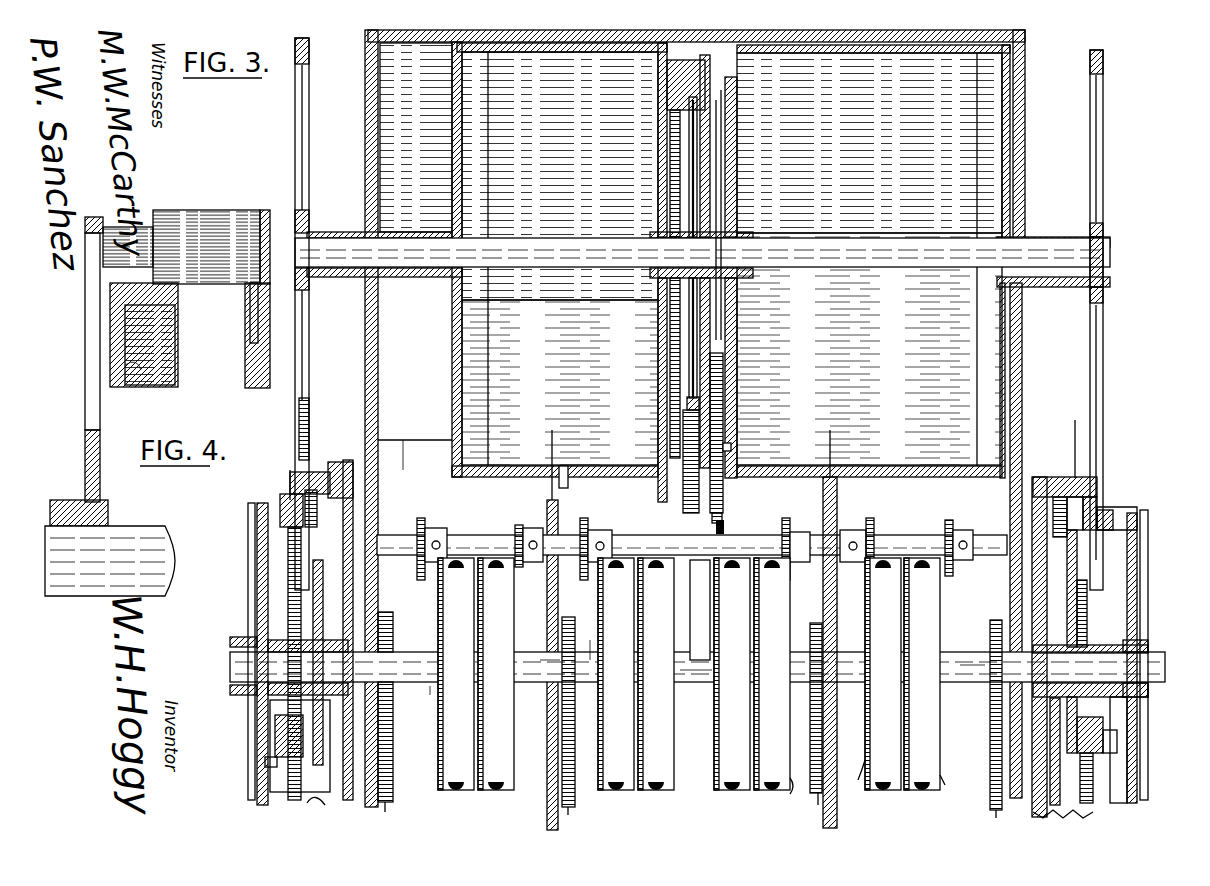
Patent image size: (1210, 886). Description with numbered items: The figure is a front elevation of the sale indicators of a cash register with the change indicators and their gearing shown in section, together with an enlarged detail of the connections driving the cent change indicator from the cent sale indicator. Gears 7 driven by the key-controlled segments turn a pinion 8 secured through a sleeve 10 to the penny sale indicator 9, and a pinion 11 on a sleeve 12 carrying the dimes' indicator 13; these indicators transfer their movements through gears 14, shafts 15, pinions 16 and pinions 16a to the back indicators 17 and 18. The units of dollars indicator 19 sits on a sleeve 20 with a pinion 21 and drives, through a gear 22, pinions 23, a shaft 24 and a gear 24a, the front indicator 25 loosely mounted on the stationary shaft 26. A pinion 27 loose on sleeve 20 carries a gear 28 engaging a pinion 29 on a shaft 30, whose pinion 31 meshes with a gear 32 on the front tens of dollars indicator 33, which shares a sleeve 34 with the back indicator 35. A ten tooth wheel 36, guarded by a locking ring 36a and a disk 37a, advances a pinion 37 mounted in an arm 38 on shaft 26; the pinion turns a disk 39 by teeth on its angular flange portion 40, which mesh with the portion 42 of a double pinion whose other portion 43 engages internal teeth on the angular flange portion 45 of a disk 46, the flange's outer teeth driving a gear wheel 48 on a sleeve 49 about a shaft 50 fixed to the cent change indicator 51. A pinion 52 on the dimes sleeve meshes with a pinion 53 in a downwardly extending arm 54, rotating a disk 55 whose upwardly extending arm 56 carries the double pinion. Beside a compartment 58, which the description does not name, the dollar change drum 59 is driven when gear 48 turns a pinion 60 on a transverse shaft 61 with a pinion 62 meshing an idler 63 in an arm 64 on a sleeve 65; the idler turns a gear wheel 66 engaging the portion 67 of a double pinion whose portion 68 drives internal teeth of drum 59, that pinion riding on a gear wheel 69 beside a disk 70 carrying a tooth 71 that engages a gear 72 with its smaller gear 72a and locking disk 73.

In FIG. 3, the gear 7 is at (687, 812).
In FIG. 3, the pinion 8 is at (993, 640).
In FIG. 3, the penny sale indicator 9 is at (926, 792).
In FIG. 3, the sleeve 10 is at (973, 687).
In FIG. 3, the pinion 11 is at (816, 624).
In FIG. 3, the sleeve 12 is at (840, 685).
In FIG. 3, the dimes' indicator 13 is at (890, 790).
In FIG. 3, the gear 14 is at (950, 764).
In FIG. 3, the shaft 15 is at (851, 543).
In FIG. 3, the pinion 16 is at (870, 535).
In FIG. 3, the pinion 16a is at (515, 535).
In FIG. 3, the indicator 17 is at (460, 790).
In FIG. 3, the indicator 18 is at (499, 790).
In FIG. 3, the units of dollars indicator 19 is at (622, 790).
In FIG. 3, the sleeve 20 is at (588, 640).
In FIG. 3, the pinion 21 is at (548, 680).
In FIG. 3, the gear 22 is at (578, 810).
In FIG. 3, the pinion 23 is at (590, 520).
In FIG. 3, the shaft 24 is at (658, 535).
In FIG. 3, the gear 24a is at (787, 792).
In FIG. 3, the indicator 25 is at (770, 790).
In FIG. 3, the stationary shaft 26 is at (232, 669).
In FIG. 4, the stationary shaft 26 is at (135, 528).
In FIG. 3, the pinion 27 is at (393, 626).
In FIG. 3, the gear 28 is at (393, 762).
In FIG. 3, the pinion 29 is at (418, 518).
In FIG. 3, the shaft 30 is at (436, 528).
In FIG. 3, the pinion 31 is at (720, 522).
In FIG. 3, the gear 32 is at (716, 572).
In FIG. 3, the front tens of dollars indicator 33 is at (732, 790).
In FIG. 3, the sleeve 34 is at (698, 684).
In FIG. 3, the back indicator 35 is at (660, 790).
In FIG. 3, the ten tooth wheel 36 is at (328, 598).
In FIG. 4, the ten tooth wheel 36 is at (247, 372).
In FIG. 3, the locking ring 36a is at (1050, 560).
In FIG. 4, the locking ring 36a is at (252, 341).
In FIG. 3, the pinion 37 is at (325, 467).
In FIG. 4, the pinion 37 is at (210, 212).
In FIG. 3, the disk 37a is at (1035, 509).
In FIG. 4, the disk 37a is at (264, 210).
In FIG. 3, the arm 38 is at (257, 596).
In FIG. 4, the arm 38 is at (90, 375).
In FIG. 3, the disk 39 is at (270, 716).
In FIG. 4, the disk 39 is at (140, 372).
In FIG. 3, the angular flange portion 40 is at (1118, 510).
In FIG. 4, the angular flange portion 40 is at (168, 318).
In FIG. 3, the portion of double pinion 42 is at (280, 497).
In FIG. 3, the portion of double pinion 43 is at (290, 482).
In FIG. 3, the angular flange portion 45 is at (333, 470).
In FIG. 3, the disk 46 is at (255, 574).
In FIG. 3, the gear wheel 48 is at (307, 372).
In FIG. 3, the sleeve 49 is at (1068, 288).
In FIG. 3, the shaft 50 is at (610, 250).
In FIG. 3, the cent change indicator 51 is at (923, 51).
In FIG. 3, the pinion 52 is at (290, 703).
In FIG. 3, the pinion 53 is at (265, 762).
In FIG. 3, the downwardly extending arm 54 is at (278, 745).
In FIG. 3, the disk 55 is at (298, 593).
In FIG. 3, the upwardly extending arm 56 is at (295, 560).
In FIG. 3, the drum compartment 58 is at (431, 43).
In FIG. 3, the dollar change drum 59 is at (593, 51).
In FIG. 3, the pinion 60 is at (308, 423).
In FIG. 3, the transverse shaft 61 is at (404, 440).
In FIG. 3, the pinion 62 is at (683, 486).
In FIG. 3, the idler 63 is at (670, 336).
In FIG. 3, the arm 64 is at (688, 386).
In FIG. 3, the sleeve 65 is at (570, 479).
In FIG. 3, the gear wheel 66 is at (690, 149).
In FIG. 3, the portion of double pinion 67 is at (735, 60).
In FIG. 3, the portion of double pinion 68 is at (668, 113).
In FIG. 3, the gear wheel 69 is at (718, 132).
In FIG. 3, the disk 70 is at (723, 172).
In FIG. 3, the laterally projecting tooth 71 is at (715, 380).
In FIG. 3, the gear 72 is at (723, 455).
In FIG. 3, the gear 72a is at (732, 452).
In FIG. 3, the locking disk 73 is at (720, 511).